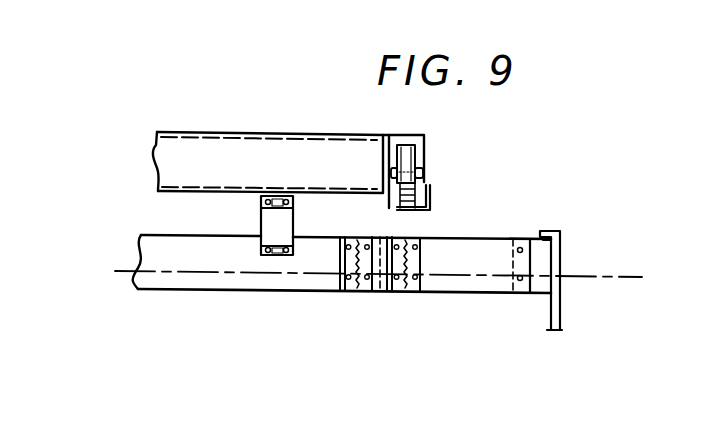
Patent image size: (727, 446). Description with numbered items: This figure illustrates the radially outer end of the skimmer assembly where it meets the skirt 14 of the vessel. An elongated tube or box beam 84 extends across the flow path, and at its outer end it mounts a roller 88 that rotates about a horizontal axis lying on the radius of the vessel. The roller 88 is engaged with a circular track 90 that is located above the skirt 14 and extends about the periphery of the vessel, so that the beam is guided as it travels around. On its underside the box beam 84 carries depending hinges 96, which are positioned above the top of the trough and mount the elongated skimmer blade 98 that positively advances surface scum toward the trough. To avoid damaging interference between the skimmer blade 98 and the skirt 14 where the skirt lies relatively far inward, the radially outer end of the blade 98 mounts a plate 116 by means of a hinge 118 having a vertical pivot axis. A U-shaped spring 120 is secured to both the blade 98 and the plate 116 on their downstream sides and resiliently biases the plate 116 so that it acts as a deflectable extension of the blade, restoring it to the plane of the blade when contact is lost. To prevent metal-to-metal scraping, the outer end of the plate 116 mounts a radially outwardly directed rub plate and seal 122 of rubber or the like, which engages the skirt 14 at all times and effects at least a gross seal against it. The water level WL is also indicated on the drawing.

The box beam 84 is at (283, 153).
The roller 88 is at (410, 160).
The circular track 90 is at (431, 200).
The hinges 96 is at (296, 222).
The skimmer blade 98 is at (203, 257).
The water line WL is at (157, 270).
The hinge 118 is at (392, 283).
The plate 116 is at (467, 280).
The U-shaped spring 120 is at (407, 238).
The rub plate and seal 122 is at (540, 287).
The skirt 14 is at (560, 307).